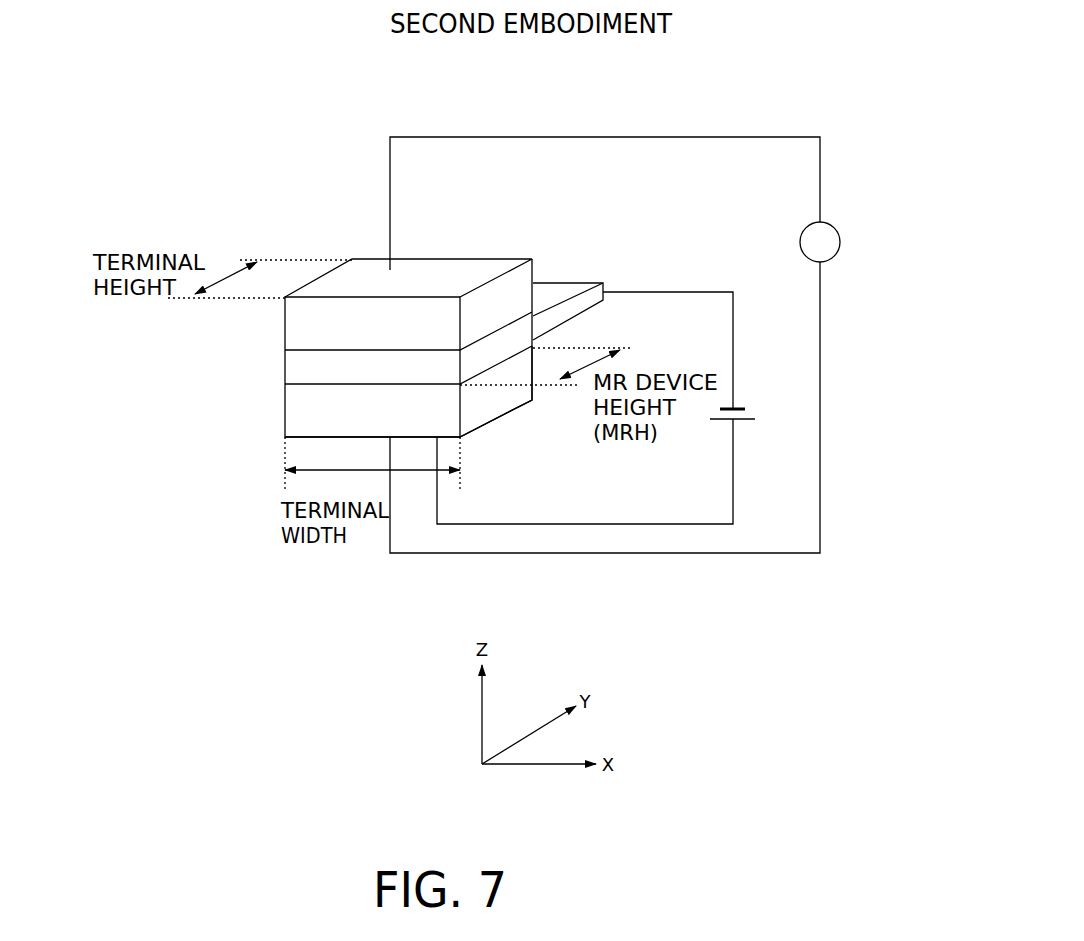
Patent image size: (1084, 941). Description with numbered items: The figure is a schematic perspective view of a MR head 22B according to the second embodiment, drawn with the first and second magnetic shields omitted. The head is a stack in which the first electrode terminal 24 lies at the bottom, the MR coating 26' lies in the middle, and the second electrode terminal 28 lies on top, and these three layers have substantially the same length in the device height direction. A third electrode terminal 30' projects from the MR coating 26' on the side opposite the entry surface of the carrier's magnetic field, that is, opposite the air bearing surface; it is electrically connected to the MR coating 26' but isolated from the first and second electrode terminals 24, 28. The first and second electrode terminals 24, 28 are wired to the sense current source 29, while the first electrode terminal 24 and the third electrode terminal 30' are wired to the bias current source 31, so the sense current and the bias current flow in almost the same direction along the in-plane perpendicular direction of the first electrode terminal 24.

The MR head 22B is at (413, 324).
The second electrode terminal 28 is at (365, 270).
The MR coating 26' is at (377, 365).
The first electrode terminal 24 is at (495, 405).
The third electrode terminal 30' is at (568, 284).
The sense current source 29 is at (822, 225).
The bias current source 31 is at (735, 422).